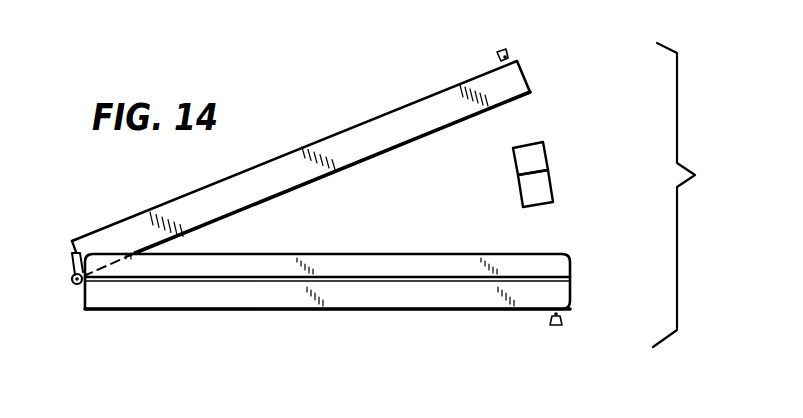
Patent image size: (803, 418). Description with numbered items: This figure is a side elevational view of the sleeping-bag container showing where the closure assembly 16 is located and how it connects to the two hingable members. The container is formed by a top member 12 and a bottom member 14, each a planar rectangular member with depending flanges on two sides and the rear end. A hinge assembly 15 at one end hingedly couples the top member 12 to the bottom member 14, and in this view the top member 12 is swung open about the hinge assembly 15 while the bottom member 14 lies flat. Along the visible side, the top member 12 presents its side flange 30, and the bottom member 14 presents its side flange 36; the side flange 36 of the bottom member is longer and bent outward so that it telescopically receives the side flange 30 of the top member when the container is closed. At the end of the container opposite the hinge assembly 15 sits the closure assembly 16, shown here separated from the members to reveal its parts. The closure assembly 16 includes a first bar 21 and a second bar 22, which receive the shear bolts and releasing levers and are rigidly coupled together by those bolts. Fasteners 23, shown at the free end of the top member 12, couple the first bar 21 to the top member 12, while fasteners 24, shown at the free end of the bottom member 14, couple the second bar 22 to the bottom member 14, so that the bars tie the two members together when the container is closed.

The top member 12 is at (325, 134).
The bottom member 14 is at (333, 314).
The hinge assembly 15 is at (69, 294).
The closure assembly 16 is at (583, 164).
The first bar 21 is at (543, 153).
The second bar 22 is at (551, 181).
The fasteners 23 is at (504, 49).
The fasteners 24 is at (558, 327).
The side flange 30 is at (378, 148).
The side flange 36 is at (405, 300).